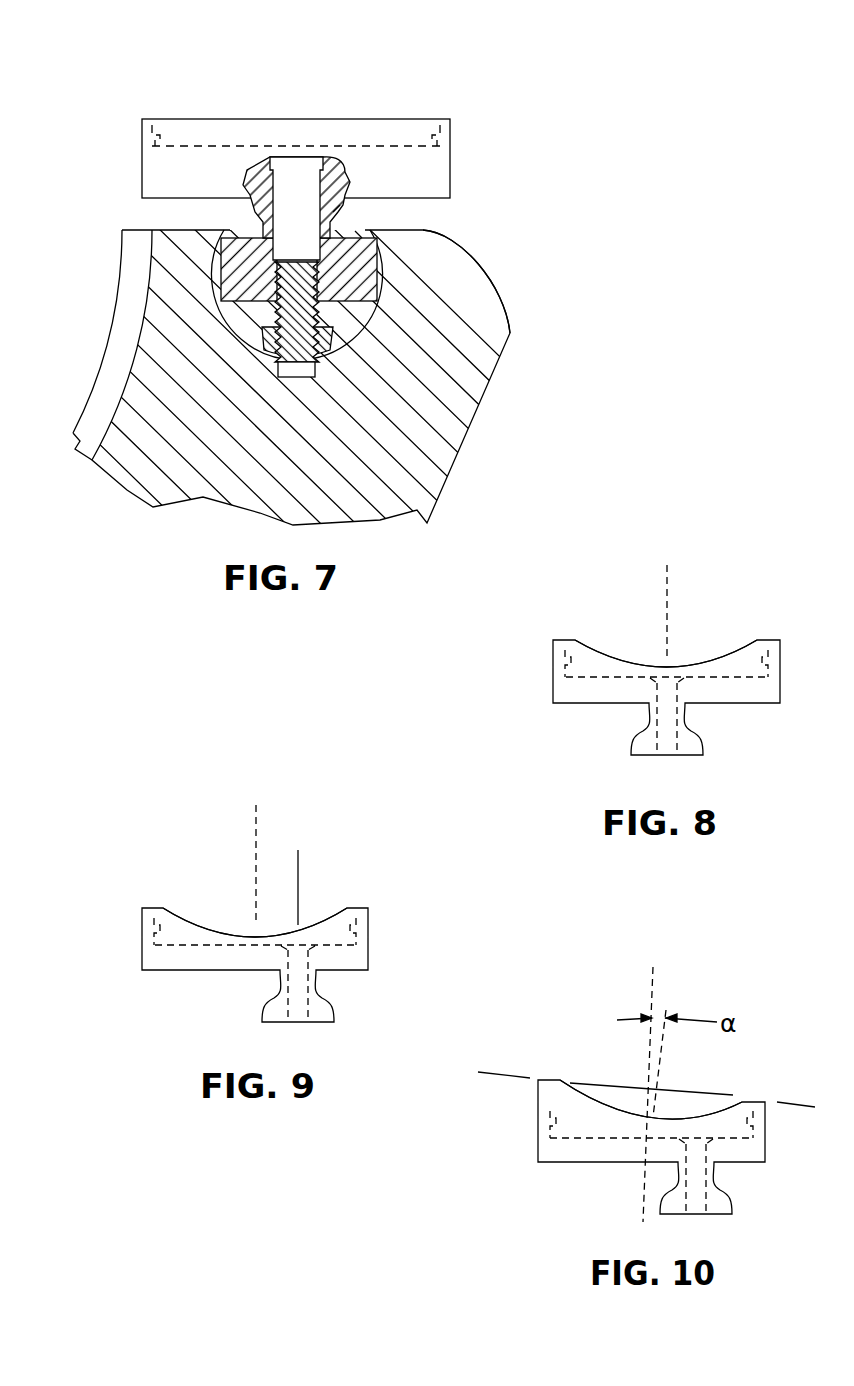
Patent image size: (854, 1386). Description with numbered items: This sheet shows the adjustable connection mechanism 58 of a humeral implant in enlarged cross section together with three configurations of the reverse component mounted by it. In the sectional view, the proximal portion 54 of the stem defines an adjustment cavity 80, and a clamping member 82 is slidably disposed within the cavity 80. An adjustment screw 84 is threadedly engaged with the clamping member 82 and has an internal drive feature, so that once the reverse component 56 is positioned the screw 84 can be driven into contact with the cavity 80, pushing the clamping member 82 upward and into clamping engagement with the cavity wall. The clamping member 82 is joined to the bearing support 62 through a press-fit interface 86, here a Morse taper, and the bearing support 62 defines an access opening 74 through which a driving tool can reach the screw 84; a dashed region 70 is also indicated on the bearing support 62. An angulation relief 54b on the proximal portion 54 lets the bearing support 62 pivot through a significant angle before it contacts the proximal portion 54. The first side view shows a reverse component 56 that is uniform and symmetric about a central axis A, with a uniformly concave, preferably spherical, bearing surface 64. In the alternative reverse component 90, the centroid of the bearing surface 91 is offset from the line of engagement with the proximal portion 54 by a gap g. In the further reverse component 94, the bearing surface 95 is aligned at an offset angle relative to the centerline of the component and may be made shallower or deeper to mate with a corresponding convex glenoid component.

In FIG. 7, the proximal portion 54 is at (465, 312).
In FIG. 7, the angulation relief 54b is at (482, 278).
In FIG. 8, the reverse component 56 is at (541, 674).
In FIG. 7, the adjustable connection mechanism 58 is at (358, 229).
In FIG. 7, the bearing support 62 is at (460, 135).
In FIG. 8, the bearing surface 64 is at (603, 653).
In FIG. 7, the groove 70 is at (200, 137).
In FIG. 7, the access opening 74 is at (315, 147).
In FIG. 7, the adjustment cavity 80 is at (225, 308).
In FIG. 7, the clamping member 82 is at (253, 240).
In FIG. 7, the adjustment screw 84 is at (260, 337).
In FIG. 7, the press-fit interface 86 is at (333, 212).
In FIG. 9, the reverse component 90 is at (130, 942).
In FIG. 9, the bearing surface 91 is at (193, 923).
In FIG. 10, the reverse component 94 is at (523, 1130).
In FIG. 10, the bearing surface 95 is at (595, 1100).
In FIG. 8, the central axis A is at (667, 584).
In FIG. 9, the central axis A is at (257, 813).
In FIG. 10, the central axis A is at (653, 980).
In FIG. 9, the gap g is at (256, 862).